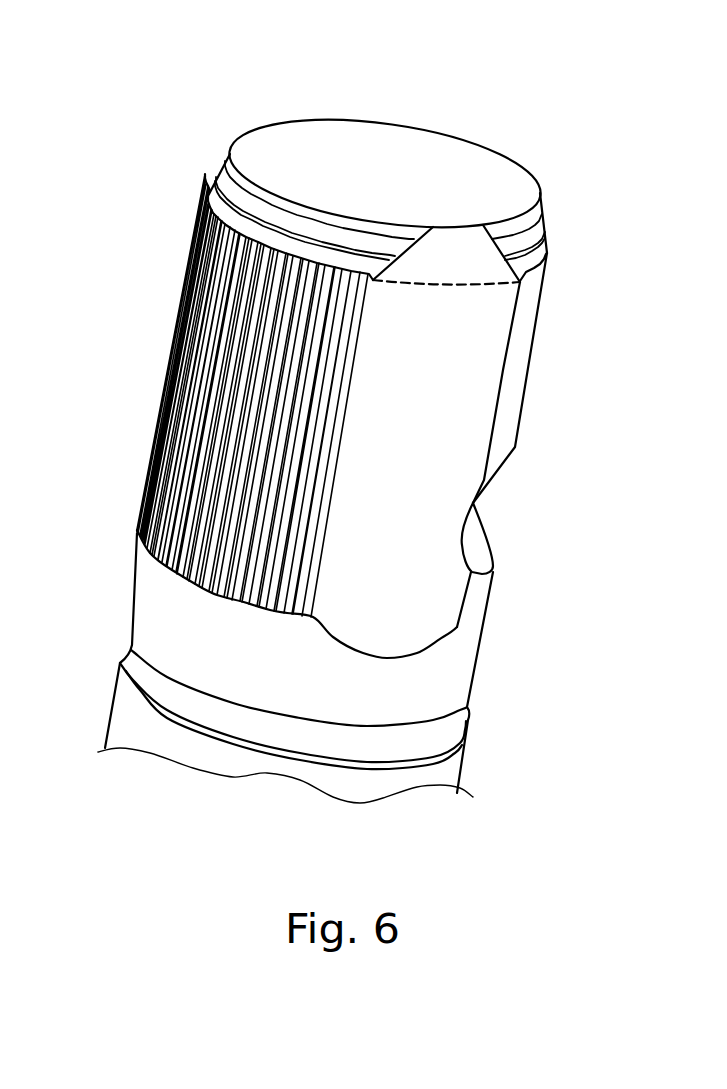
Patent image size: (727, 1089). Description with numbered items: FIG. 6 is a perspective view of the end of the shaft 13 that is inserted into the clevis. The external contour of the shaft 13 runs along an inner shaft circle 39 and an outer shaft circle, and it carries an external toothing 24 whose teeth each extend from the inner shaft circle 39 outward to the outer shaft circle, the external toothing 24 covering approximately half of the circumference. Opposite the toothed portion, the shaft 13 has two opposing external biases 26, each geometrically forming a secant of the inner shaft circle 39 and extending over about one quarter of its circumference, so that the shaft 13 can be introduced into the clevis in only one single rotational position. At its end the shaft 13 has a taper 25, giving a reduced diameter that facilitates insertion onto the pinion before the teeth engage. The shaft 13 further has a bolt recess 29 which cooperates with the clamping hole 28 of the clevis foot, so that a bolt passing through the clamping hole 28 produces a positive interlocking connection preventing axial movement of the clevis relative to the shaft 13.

The shaft 13 is at (191, 80).
The external toothing 24 is at (178, 270).
The taper 25 is at (535, 224).
The external bias 26 is at (468, 408).
The clamping hole 28 is at (122, 340).
The bolt recess 29 is at (473, 531).
The inner shaft circle 39 is at (508, 284).